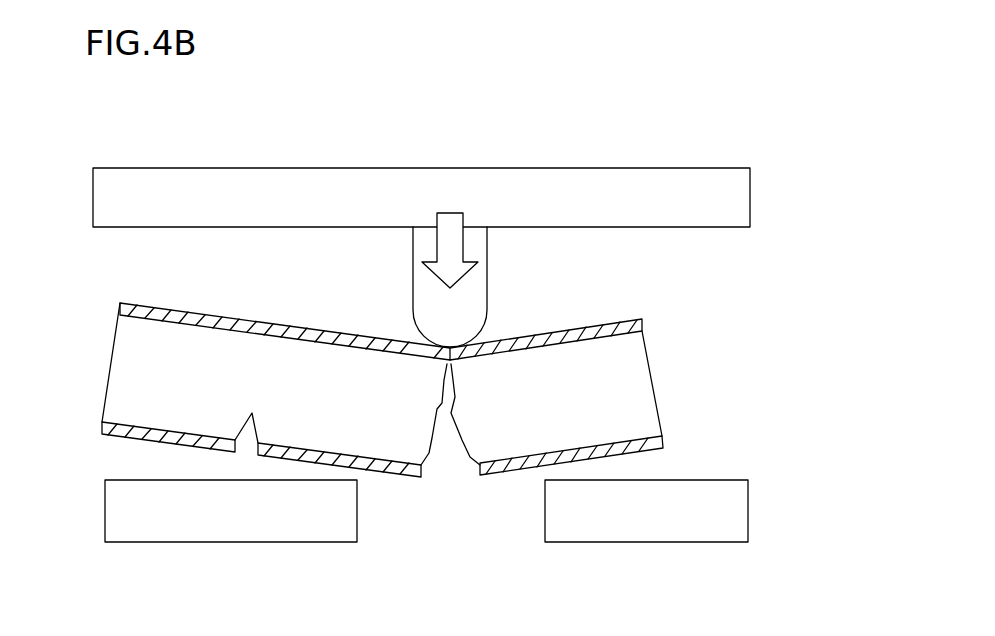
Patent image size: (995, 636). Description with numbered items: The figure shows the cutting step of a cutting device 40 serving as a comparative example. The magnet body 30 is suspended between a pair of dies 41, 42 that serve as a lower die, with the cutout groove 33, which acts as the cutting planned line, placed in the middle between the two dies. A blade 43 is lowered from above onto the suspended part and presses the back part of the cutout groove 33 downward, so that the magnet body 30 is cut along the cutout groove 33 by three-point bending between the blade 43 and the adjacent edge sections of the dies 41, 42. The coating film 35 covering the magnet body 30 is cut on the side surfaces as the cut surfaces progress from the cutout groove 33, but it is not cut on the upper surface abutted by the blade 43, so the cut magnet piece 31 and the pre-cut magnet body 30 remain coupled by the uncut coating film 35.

The cutting device 40 is at (649, 134).
The blade 43 is at (473, 290).
The magnet body 30 is at (298, 326).
The coating film 35 is at (203, 445).
The magnet piece 31 is at (627, 380).
The cutout groove 33 is at (252, 426).
The die 41 is at (330, 513).
The die 42 is at (638, 513).